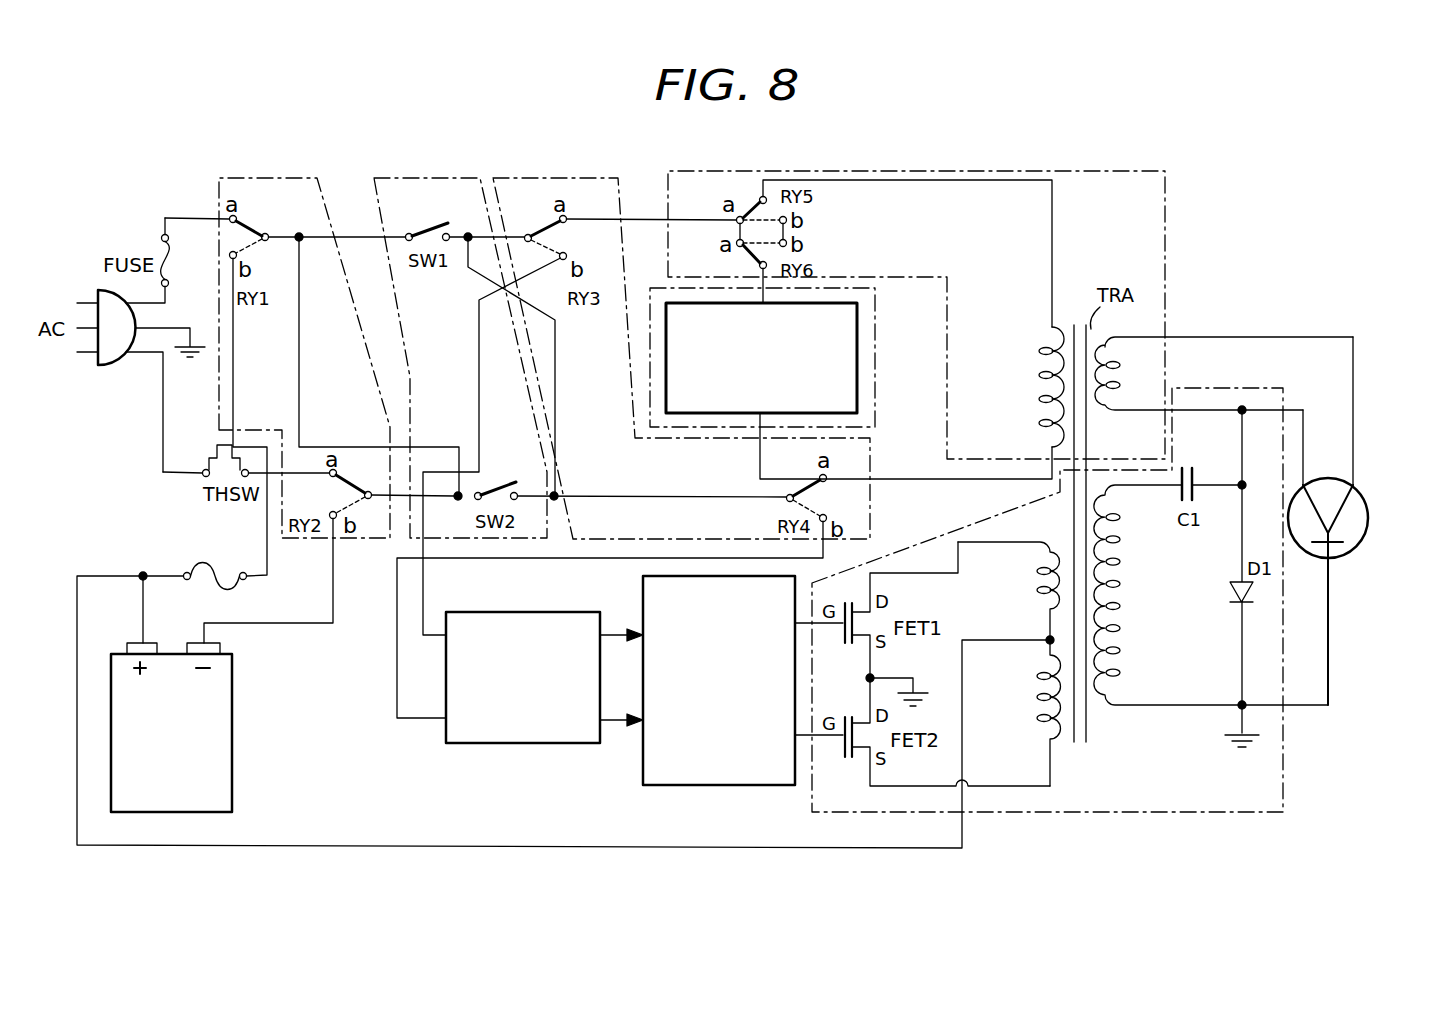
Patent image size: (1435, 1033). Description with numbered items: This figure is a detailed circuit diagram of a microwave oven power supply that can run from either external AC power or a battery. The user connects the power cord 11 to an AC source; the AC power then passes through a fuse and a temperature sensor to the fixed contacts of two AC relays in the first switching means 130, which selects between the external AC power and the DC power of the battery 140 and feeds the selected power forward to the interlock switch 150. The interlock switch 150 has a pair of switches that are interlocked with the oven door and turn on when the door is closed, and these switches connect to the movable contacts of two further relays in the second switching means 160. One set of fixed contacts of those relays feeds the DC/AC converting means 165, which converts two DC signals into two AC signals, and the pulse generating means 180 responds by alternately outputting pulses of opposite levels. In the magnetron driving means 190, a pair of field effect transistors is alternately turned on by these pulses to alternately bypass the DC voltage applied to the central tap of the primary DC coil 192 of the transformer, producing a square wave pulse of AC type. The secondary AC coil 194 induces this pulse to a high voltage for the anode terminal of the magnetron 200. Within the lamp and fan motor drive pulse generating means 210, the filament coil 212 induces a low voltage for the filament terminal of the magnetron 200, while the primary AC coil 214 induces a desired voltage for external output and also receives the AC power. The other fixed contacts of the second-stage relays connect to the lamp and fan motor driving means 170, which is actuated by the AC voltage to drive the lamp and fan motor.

The power cord 11 is at (107, 366).
The first switching means 130 is at (268, 177).
The battery 140 is at (233, 733).
The interlock switch 150 is at (430, 177).
The second switching means 160 is at (555, 177).
The DC/AC converting means 165 is at (519, 745).
The lamp and fan motor driving means 170 is at (873, 357).
The pulse generating means 180 is at (713, 787).
The magnetron driving means 190 is at (1067, 813).
The primary DC coil 192 is at (1037, 701).
The secondary AC coil 194 is at (1123, 605).
The magnetron 200 is at (1368, 517).
The lamp and fan motor drive pulse generating means 210 is at (923, 170).
The filament coil 212 is at (1112, 413).
The primary AC coil 214 is at (1038, 375).